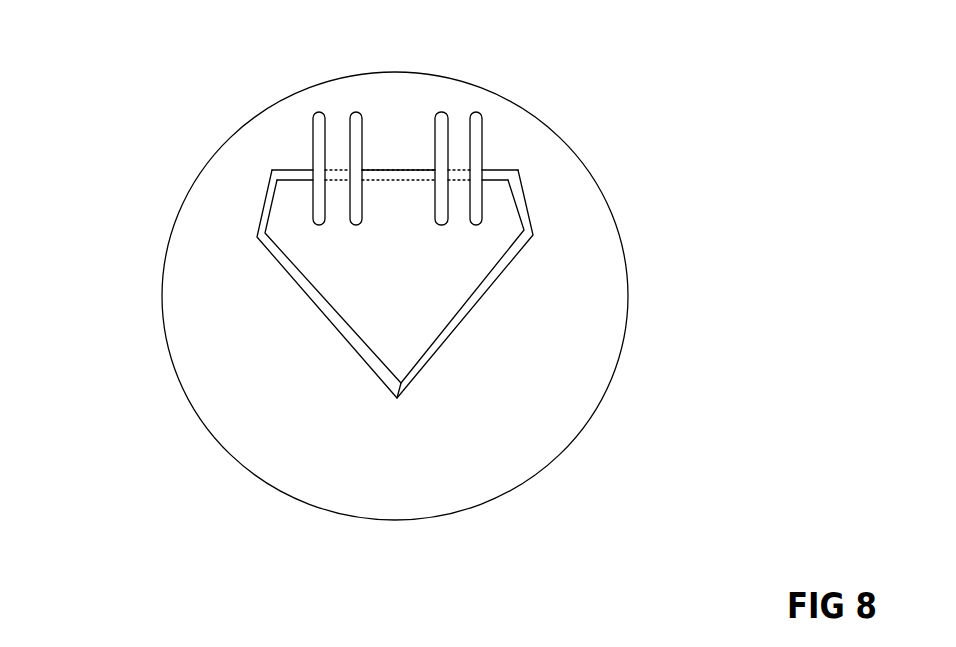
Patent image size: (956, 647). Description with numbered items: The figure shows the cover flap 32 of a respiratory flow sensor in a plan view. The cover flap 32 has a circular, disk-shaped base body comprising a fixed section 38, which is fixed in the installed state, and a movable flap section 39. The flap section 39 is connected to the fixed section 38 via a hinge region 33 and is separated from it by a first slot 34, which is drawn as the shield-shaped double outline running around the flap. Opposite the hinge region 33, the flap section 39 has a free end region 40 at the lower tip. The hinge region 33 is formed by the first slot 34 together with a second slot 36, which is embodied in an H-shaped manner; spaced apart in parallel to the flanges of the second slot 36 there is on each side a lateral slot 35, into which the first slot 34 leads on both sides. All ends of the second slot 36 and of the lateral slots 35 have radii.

The cover flap 32 is at (698, 190).
The hinge region 33 is at (222, 165).
The first slot 34 is at (313, 303).
The lateral slot 35 is at (310, 138).
The second slot 36 is at (399, 168).
The fixed section 38 is at (560, 393).
The flap section 39 is at (426, 273).
The free end region 40 is at (412, 357).